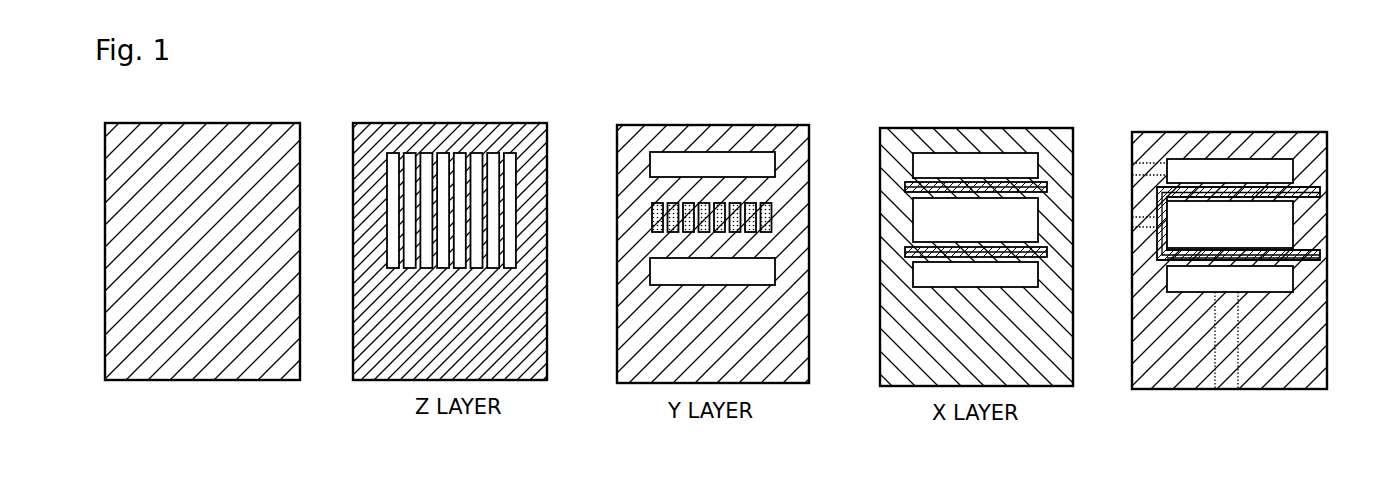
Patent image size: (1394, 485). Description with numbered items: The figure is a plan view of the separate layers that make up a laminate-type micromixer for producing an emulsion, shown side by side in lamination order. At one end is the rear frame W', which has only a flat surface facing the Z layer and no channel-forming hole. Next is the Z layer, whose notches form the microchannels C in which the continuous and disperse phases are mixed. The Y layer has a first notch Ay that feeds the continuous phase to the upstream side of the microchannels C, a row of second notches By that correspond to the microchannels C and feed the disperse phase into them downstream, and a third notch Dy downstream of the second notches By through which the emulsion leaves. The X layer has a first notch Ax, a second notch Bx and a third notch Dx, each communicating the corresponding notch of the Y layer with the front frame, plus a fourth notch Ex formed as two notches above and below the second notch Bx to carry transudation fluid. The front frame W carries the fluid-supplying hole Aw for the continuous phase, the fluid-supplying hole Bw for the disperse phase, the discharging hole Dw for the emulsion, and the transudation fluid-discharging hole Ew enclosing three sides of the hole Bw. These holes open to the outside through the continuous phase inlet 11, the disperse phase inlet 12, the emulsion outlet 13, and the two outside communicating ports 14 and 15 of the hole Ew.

The rear frame W' is at (202, 271).
The microchannels C is at (430, 218).
The first notch in the Y layer Ay is at (652, 161).
The second notches in the Y layer By is at (652, 217).
The third notch in the Y layer Dy is at (652, 273).
The first notch in the X layer Ax is at (915, 165).
The fourth notch in the X layer Ex is at (907, 188).
The second notch in the X layer Bx is at (915, 220).
The third notch in the X layer Dx is at (915, 275).
The front frame W is at (1229, 279).
The fluid-supplying hole for the continuous phase Aw is at (1291, 160).
The transudation fluid-discharging hole Ew is at (1312, 190).
The outside communicating port 15 is at (1322, 195).
The outside communicating port 14 is at (1322, 257).
The fluid-supplying hole for the disperse phase Bw is at (1285, 226).
The discharging hole for the emulsion Dw is at (1288, 281).
The continuous phase inlet 11 is at (1133, 175).
The disperse phase inlet 12 is at (1133, 227).
The emulsion outlet 13 is at (1222, 391).